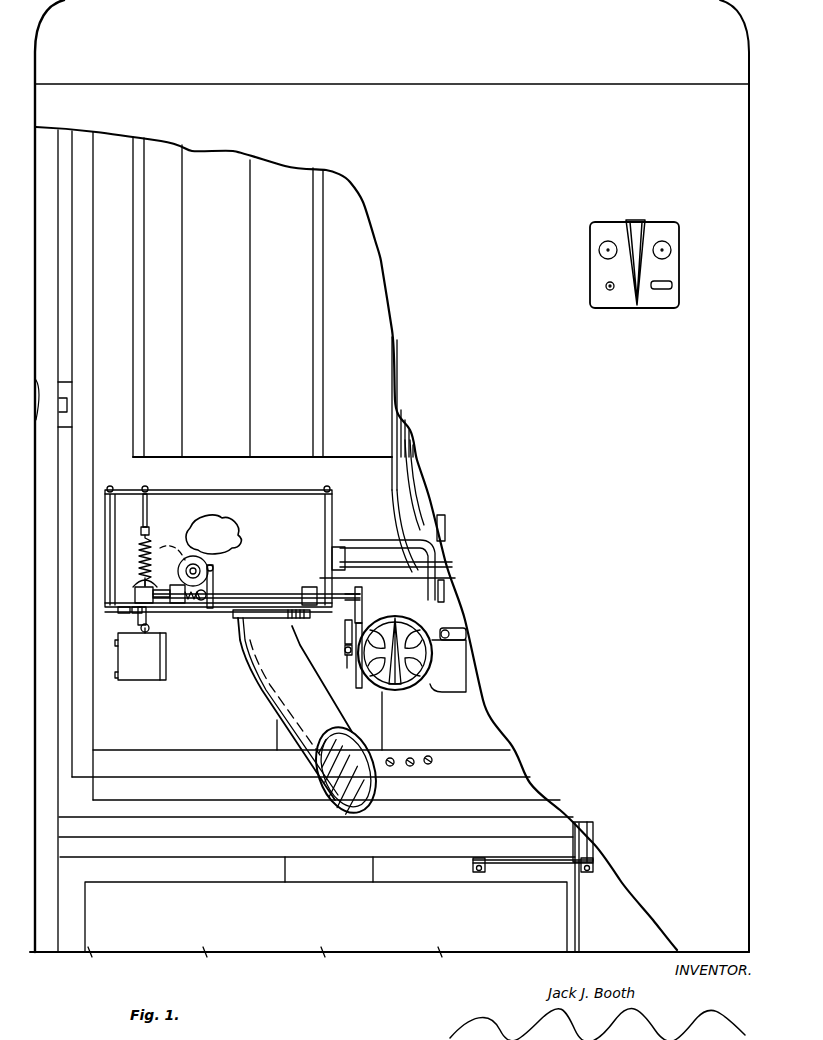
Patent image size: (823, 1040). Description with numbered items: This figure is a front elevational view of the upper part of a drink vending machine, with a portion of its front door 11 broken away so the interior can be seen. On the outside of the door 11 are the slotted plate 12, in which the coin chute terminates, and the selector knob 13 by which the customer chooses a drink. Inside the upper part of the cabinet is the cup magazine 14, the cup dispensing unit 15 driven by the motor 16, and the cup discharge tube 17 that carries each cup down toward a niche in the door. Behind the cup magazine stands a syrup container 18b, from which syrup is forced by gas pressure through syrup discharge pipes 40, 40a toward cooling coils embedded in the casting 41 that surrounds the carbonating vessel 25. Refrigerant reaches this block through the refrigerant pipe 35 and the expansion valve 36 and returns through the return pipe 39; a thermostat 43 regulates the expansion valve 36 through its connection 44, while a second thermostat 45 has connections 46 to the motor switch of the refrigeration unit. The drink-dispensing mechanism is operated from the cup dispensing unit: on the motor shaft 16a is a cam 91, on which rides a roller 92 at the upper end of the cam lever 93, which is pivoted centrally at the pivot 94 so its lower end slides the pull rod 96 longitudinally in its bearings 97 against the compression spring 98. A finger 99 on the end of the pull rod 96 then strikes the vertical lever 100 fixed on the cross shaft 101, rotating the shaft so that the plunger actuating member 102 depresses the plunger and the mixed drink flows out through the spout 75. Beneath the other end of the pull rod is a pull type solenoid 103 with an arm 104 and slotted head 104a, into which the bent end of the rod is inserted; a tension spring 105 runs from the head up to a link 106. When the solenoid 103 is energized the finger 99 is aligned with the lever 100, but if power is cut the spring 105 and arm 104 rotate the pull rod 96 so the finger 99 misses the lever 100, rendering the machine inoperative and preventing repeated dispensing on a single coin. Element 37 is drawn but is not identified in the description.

The front door 11 is at (745, 434).
The slotted plate 12 is at (672, 266).
The selector knob 13 is at (437, 650).
The cup magazine 14 is at (283, 173).
The cup dispensing unit 15 is at (303, 500).
The motor 16 is at (197, 565).
The motor shaft 16a is at (211, 558).
The cup discharge tube 17 is at (265, 681).
The syrup container 18b is at (378, 284).
The carbonating vessel 25 is at (446, 543).
The refrigerant pipe 35 is at (322, 686).
The expansion valve 36 is at (333, 559).
The rod 37 is at (376, 565).
The refrigerant return pipe 39 is at (385, 582).
The syrup discharge pipe 40 is at (390, 443).
The syrup discharge pipe 40a is at (417, 481).
The casting 41 is at (487, 719).
The thermostat 43 is at (458, 635).
The thermostat connection 44 is at (373, 542).
The thermostat 45 is at (452, 586).
The thermostat connections 46 is at (447, 700).
The spout 75 is at (362, 690).
The cam 91 is at (172, 539).
The roller 92 is at (214, 570).
The cam lever 93 is at (203, 594).
The pivot 94 is at (214, 584).
The pull rod 96 is at (250, 593).
The bearings 97 is at (176, 588).
The compression spring 98 is at (189, 611).
The finger 99 is at (362, 600).
The vertical lever 100 is at (345, 627).
The cross shaft 101 is at (348, 662).
The plunger actuating member 102 is at (345, 655).
The solenoid 103 is at (152, 663).
The solenoid arm 104 is at (145, 614).
The slotted head 104a is at (144, 588).
The tension spring 105 is at (149, 576).
The link 106 is at (149, 506).